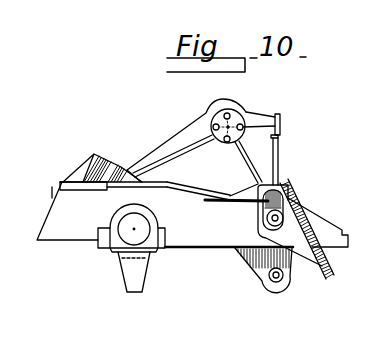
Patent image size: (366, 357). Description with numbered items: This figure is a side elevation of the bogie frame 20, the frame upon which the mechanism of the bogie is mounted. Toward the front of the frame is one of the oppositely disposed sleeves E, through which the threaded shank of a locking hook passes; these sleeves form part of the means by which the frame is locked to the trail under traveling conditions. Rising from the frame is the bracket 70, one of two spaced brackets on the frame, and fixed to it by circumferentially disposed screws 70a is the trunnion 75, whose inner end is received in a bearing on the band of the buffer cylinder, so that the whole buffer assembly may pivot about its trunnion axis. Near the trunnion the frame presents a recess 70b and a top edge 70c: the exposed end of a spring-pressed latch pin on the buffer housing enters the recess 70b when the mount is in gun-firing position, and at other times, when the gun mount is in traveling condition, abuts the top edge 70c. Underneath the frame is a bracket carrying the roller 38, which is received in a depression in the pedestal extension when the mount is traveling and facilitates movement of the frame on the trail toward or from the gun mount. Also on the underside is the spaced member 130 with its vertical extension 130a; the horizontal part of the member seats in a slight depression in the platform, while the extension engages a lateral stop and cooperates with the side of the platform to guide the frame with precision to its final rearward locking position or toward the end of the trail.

The frame 20 is at (198, 192).
The roller 38 is at (284, 287).
The bracket 70 is at (178, 139).
The screws 70a is at (229, 117).
The recess 70b is at (279, 133).
The top edge 70c is at (273, 113).
The trunnion 75 is at (222, 142).
The spaced member 130 is at (127, 263).
The vertical extension 130a is at (143, 280).
The sleeve E is at (93, 155).